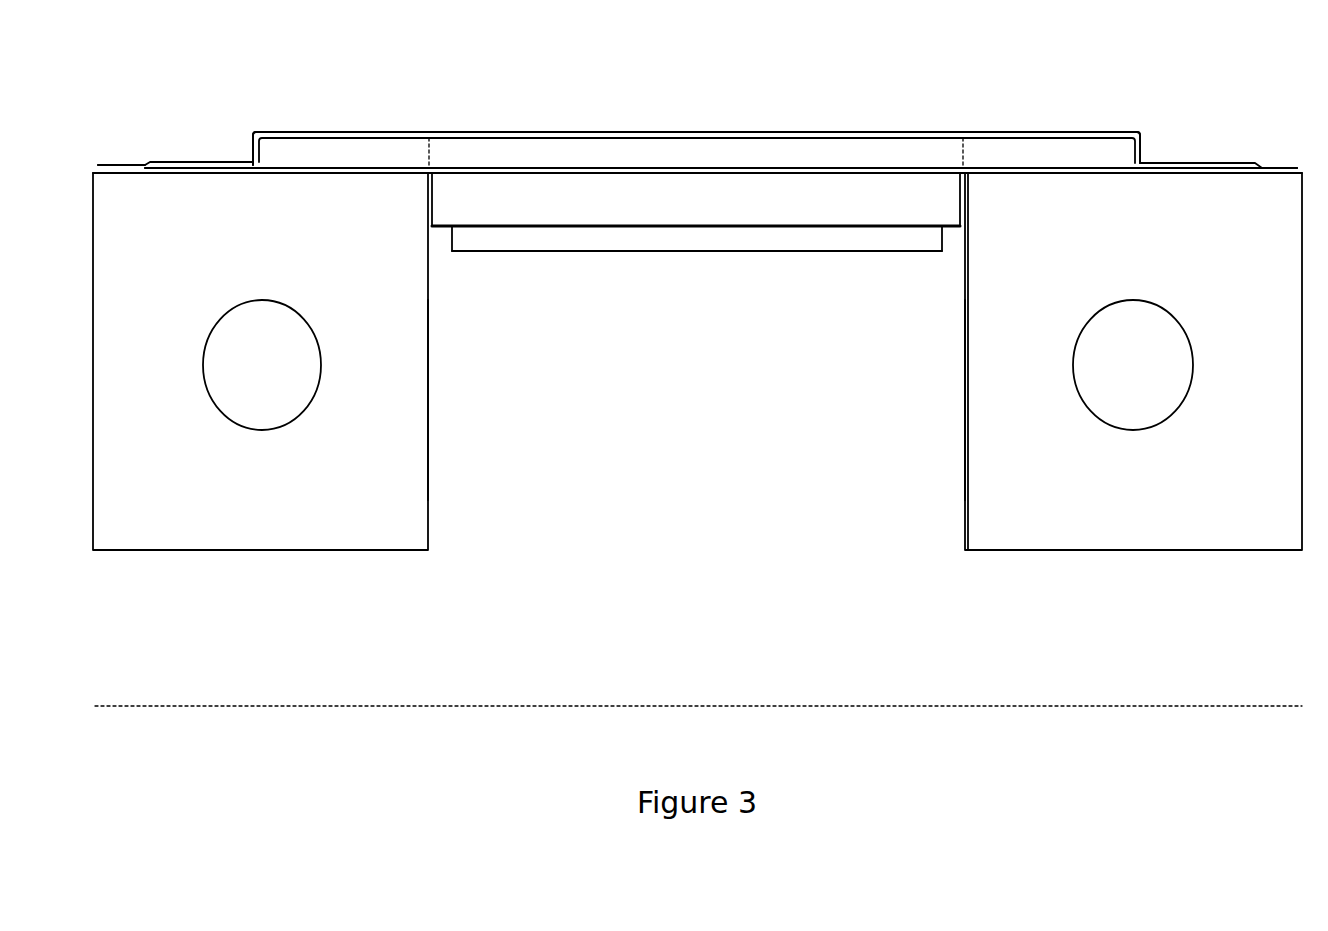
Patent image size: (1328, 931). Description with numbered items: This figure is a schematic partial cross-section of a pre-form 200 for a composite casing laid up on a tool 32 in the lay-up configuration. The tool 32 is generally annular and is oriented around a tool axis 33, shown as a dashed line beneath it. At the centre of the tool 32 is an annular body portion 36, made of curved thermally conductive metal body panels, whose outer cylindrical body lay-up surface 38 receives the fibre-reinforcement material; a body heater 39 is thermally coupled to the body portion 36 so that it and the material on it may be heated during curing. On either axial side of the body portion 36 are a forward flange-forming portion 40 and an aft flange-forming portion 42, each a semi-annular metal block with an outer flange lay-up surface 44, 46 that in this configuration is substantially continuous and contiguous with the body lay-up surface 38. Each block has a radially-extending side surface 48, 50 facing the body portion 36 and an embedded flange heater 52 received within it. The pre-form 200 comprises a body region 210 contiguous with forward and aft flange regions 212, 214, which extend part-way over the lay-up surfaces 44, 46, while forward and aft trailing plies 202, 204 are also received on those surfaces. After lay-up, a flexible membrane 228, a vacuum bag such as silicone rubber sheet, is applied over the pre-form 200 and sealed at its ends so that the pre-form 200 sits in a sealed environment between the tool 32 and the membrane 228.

The tool 32 is at (507, 342).
The tool axis 33 is at (236, 708).
The annular body portion 36 is at (770, 210).
The body lay-up surface 38 is at (698, 175).
The body heater 39 is at (817, 238).
The forward flange-forming portion 40 is at (182, 487).
The aft flange-forming portion 42 is at (1198, 512).
The forward flange lay-up surface 44 is at (370, 172).
The aft flange lay-up surface 46 is at (1163, 175).
The forward side surface 48 is at (428, 405).
The aft side surface 50 is at (965, 387).
The flange heater 52 is at (698, 365).
The pre-form 200 is at (832, 138).
The forward trailing ply 202 is at (190, 165).
The aft trailing ply 204 is at (1232, 165).
The body region 210 is at (641, 145).
The forward flange region 212 is at (398, 147).
The aft flange region 214 is at (1042, 147).
The flexible membrane 228 is at (99, 165).